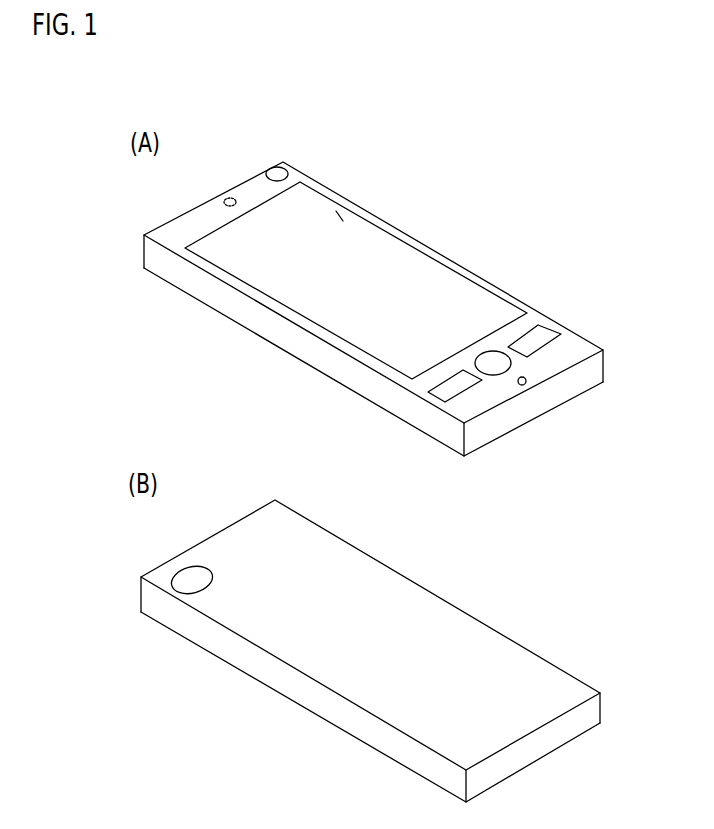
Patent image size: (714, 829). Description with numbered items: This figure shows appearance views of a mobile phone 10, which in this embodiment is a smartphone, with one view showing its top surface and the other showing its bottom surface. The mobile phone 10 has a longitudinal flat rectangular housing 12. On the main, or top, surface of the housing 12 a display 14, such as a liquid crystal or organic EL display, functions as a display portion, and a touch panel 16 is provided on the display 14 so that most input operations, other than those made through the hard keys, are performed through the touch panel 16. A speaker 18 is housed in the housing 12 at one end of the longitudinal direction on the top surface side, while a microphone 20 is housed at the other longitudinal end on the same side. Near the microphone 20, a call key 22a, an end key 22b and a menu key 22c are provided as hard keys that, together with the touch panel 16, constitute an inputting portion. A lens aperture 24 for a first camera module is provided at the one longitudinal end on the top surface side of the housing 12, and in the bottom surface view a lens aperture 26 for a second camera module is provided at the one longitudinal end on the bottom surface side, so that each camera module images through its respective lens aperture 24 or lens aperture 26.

The mobile phone 10 is at (244, 167).
The housing 12 is at (269, 339).
The display 14 is at (338, 216).
The touch panel 16 is at (401, 257).
The speaker 18 is at (202, 204).
The microphone 20 is at (524, 388).
The call key 22a is at (441, 399).
The end key 22b is at (547, 329).
The menu key 22c is at (512, 364).
The lens aperture 24 is at (287, 161).
The lens aperture 26 is at (182, 576).